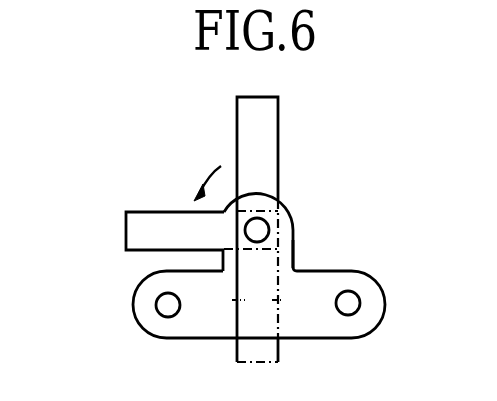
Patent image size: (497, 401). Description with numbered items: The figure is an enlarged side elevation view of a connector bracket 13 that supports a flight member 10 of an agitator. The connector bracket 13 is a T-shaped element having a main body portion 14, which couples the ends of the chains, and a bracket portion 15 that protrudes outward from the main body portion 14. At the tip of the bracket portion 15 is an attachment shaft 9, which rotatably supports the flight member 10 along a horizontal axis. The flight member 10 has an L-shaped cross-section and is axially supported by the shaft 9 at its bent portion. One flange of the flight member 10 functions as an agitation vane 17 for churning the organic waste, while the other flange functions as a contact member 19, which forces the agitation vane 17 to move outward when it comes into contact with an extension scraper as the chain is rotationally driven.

The agitation vane 17 is at (279, 148).
The flight member 10 is at (272, 183).
The attachment shaft 9 is at (258, 229).
The bracket portion 15 is at (294, 250).
The contact member 19 is at (126, 251).
The connector bracket 13 is at (180, 338).
The main body portion 14 is at (338, 327).